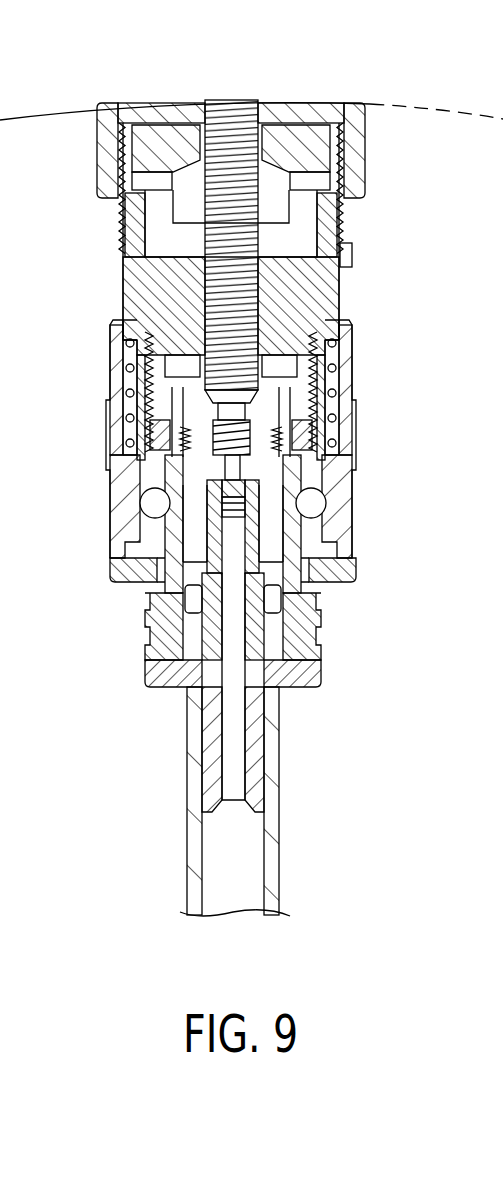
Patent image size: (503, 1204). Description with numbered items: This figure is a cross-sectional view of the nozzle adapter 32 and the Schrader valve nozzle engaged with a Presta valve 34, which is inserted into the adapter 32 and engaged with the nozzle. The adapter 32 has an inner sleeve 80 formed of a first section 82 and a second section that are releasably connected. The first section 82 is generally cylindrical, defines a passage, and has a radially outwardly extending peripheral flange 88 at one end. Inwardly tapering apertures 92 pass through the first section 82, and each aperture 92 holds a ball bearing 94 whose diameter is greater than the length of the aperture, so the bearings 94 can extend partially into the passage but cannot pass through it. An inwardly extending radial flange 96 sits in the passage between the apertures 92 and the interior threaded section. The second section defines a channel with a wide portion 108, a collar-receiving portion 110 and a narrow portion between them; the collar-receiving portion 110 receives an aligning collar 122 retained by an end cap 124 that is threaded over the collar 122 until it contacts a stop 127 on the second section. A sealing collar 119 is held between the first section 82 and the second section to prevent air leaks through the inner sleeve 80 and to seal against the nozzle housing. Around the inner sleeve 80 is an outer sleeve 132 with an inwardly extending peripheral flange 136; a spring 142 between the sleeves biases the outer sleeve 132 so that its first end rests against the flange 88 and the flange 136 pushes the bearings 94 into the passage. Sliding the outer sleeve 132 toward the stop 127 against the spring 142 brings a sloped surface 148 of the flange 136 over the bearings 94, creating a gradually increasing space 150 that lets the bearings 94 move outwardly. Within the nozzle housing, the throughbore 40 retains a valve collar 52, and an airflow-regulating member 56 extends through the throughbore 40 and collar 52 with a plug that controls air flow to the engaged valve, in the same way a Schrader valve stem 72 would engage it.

The Presta valve 34 is at (231, 95).
The aligning collar 122 is at (306, 148).
The end cap 124 is at (368, 153).
The stop 127 is at (352, 257).
The collar-receiving portion 110 is at (158, 233).
The inner sleeve 80 is at (120, 268).
The nozzle adapter 32 is at (100, 306).
The wide portion 108 is at (175, 370).
The outer sleeve 132 is at (105, 417).
The throughbore 40 is at (165, 425).
The valve stem 72 is at (207, 480).
The ball bearing 94 is at (150, 506).
The peripheral flange 88 is at (108, 572).
The first section 82 is at (105, 588).
The inwardly tapering apertures 92 is at (150, 580).
The spring 142 is at (348, 342).
The sealing collar 119 is at (350, 370).
The radial flange 96 is at (340, 435).
The peripheral flange 136 is at (355, 505).
The sloped surface 148 is at (355, 527).
The gradually increasing space 150 is at (355, 562).
The valve collar 52 is at (330, 588).
The airflow-regulating member 56 is at (318, 655).